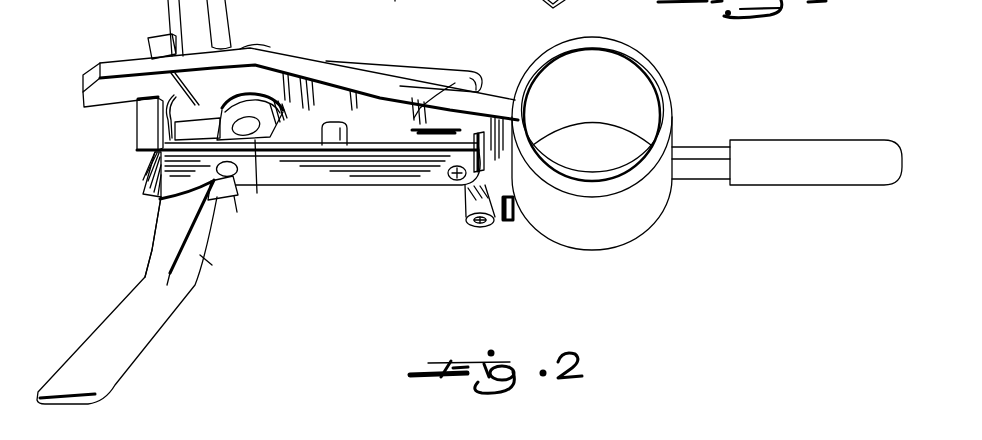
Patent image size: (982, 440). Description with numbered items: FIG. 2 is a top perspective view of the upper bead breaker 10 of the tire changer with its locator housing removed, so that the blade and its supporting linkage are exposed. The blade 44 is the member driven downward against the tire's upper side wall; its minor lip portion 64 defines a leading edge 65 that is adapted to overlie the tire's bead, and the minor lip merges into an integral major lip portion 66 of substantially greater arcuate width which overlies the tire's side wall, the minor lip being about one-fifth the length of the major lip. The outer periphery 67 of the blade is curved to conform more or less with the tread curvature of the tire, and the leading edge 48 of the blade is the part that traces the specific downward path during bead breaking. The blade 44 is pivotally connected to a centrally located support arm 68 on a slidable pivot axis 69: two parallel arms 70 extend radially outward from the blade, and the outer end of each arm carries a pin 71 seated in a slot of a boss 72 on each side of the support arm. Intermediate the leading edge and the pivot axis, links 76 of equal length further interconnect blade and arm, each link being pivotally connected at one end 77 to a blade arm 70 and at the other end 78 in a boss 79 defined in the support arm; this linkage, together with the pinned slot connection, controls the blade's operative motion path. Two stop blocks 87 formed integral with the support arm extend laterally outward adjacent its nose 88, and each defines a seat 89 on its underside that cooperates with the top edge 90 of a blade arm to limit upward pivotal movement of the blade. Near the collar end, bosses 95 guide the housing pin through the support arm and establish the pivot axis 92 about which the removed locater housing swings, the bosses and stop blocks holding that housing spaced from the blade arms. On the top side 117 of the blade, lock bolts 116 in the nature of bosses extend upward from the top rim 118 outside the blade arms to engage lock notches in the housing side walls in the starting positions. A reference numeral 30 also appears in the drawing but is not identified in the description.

The upper bead breaker 10 is at (410, 285).
The handle portion 30 is at (395, 5).
The blade 44 is at (237, 10).
The leading edge 48 is at (140, 268).
The minor lip portion 64 is at (143, 181).
The leading edge 65 is at (150, 156).
The major lip portion 66 is at (166, 2).
The outer periphery 67 is at (178, 304).
The support arm 68 is at (322, 91).
The slidable pivot axis 69 is at (456, 176).
The parallel arms 70 is at (449, 74).
The pin 71 is at (477, 157).
The boss 72 is at (424, 131).
The links 76 is at (256, 45).
The pivotal connection 77 is at (233, 183).
The pivotal connection 78 is at (224, 118).
The boss 79 is at (321, 128).
The stop blocks 87 is at (153, 46).
The nose 88 is at (92, 104).
The seat 89 is at (172, 99).
The top edge 90 is at (183, 147).
The pivot axis 92 is at (472, 222).
The bosses 95 is at (470, 208).
The lock bolt 116 is at (230, 215).
The top side 117 is at (233, 196).
The top rim 118 is at (231, 33).